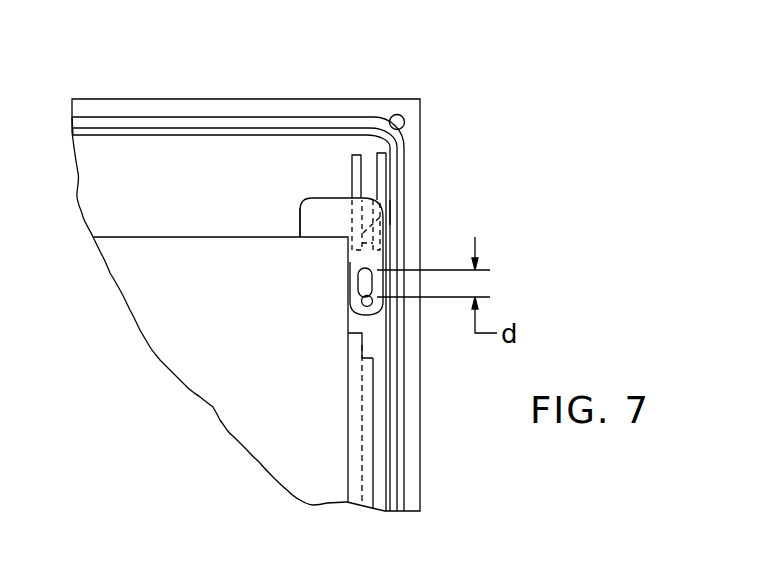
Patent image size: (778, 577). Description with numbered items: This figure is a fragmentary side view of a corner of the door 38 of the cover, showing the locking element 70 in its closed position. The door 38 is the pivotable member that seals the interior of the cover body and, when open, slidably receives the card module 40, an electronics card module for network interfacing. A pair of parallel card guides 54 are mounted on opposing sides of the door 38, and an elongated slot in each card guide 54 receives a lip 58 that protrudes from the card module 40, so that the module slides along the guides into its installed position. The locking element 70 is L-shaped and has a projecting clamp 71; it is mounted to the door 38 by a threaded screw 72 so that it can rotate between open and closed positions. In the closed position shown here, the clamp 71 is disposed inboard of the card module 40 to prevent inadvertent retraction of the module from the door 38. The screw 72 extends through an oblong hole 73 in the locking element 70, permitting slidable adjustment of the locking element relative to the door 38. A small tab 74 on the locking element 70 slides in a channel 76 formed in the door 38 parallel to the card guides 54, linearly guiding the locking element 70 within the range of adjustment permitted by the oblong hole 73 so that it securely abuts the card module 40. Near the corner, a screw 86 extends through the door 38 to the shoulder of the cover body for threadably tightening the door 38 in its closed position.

The door 38 is at (150, 96).
The card module 40 is at (212, 343).
The card guides 54 is at (365, 458).
The lip 58 is at (358, 347).
The locking element 70 is at (327, 193).
The clamp 71 is at (308, 217).
The screw 72 is at (362, 303).
The oblong hole 73 is at (350, 282).
The tab 74 is at (386, 215).
The channel 76 is at (367, 186).
The screw 86 is at (396, 115).